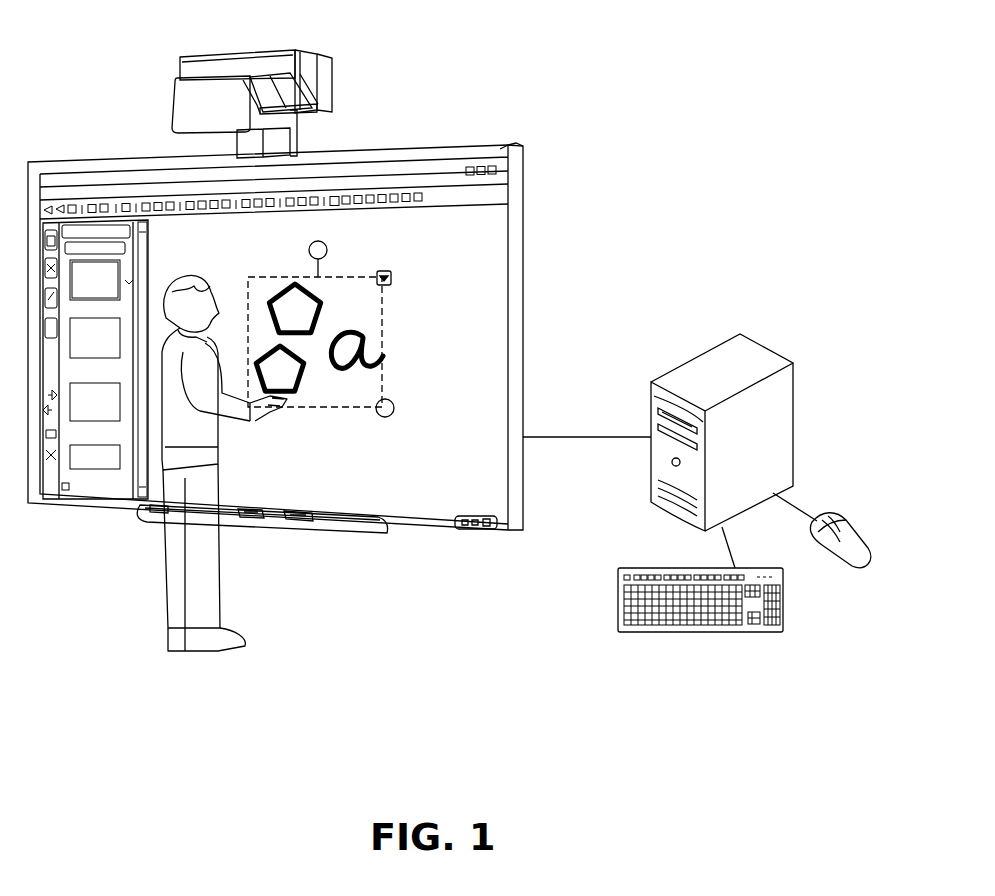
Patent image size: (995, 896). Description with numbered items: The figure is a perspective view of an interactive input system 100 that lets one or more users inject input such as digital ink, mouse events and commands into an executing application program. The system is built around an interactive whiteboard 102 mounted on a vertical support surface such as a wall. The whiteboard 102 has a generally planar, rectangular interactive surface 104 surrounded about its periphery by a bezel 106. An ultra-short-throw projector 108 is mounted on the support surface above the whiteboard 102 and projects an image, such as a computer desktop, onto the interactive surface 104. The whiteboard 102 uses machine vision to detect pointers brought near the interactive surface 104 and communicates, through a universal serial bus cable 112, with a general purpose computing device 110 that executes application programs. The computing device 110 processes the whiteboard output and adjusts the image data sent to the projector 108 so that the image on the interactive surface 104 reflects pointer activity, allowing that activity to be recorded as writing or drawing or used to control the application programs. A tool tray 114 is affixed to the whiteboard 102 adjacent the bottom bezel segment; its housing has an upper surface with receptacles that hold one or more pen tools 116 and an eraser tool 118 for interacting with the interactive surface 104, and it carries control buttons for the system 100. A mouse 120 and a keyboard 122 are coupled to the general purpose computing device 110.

The interactive input system 100 is at (738, 112).
The interactive whiteboard 102 is at (541, 193).
The interactive surface 104 is at (476, 240).
The bezel 106 is at (515, 328).
The ultra-short-throw projector 108 is at (228, 100).
The general purpose computing device 110 is at (750, 341).
The universal serial bus cable 112 is at (566, 440).
The tool tray 114 is at (384, 533).
The pen tool 116 is at (300, 516).
The eraser tool 118 is at (252, 516).
The mouse 120 is at (840, 512).
The keyboard 122 is at (788, 602).